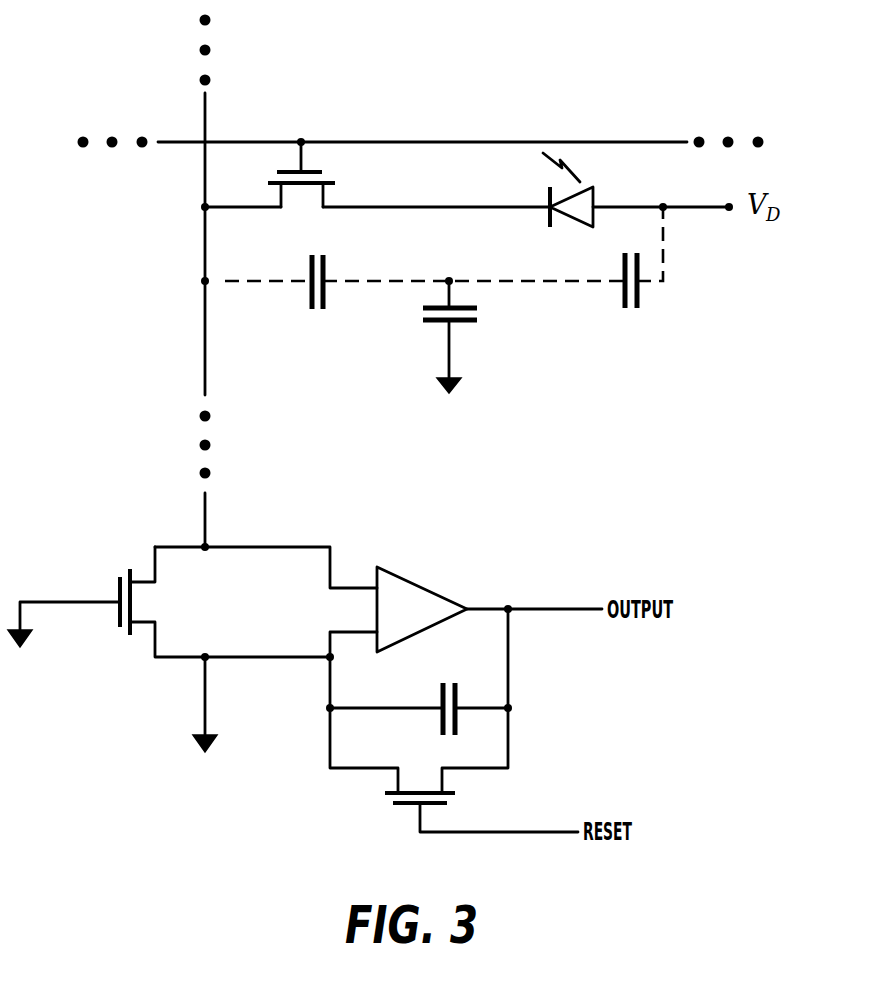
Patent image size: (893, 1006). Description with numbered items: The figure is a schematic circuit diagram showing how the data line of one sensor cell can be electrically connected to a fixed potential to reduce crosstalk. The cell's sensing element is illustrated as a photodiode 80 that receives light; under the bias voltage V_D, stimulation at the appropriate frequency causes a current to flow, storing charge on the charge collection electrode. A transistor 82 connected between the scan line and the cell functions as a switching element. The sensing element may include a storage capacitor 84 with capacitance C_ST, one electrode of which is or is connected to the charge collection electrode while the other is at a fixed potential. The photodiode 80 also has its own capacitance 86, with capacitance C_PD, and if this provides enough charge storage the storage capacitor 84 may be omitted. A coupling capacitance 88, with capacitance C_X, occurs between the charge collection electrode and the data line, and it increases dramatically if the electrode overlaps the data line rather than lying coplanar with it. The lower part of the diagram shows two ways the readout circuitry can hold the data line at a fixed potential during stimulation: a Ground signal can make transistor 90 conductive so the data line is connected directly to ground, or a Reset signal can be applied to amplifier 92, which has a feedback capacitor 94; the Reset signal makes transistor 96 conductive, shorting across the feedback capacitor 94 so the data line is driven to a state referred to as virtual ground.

The photodiode 80 is at (595, 187).
The transistor 82 is at (322, 173).
The storage capacitor 84 is at (441, 328).
The capacitance 86 is at (623, 270).
The coupling capacitance 88 is at (308, 270).
The transistor 90 is at (118, 617).
The amplifier 92 is at (432, 590).
The feedback capacitor 94 is at (440, 697).
The transistor 96 is at (435, 810).